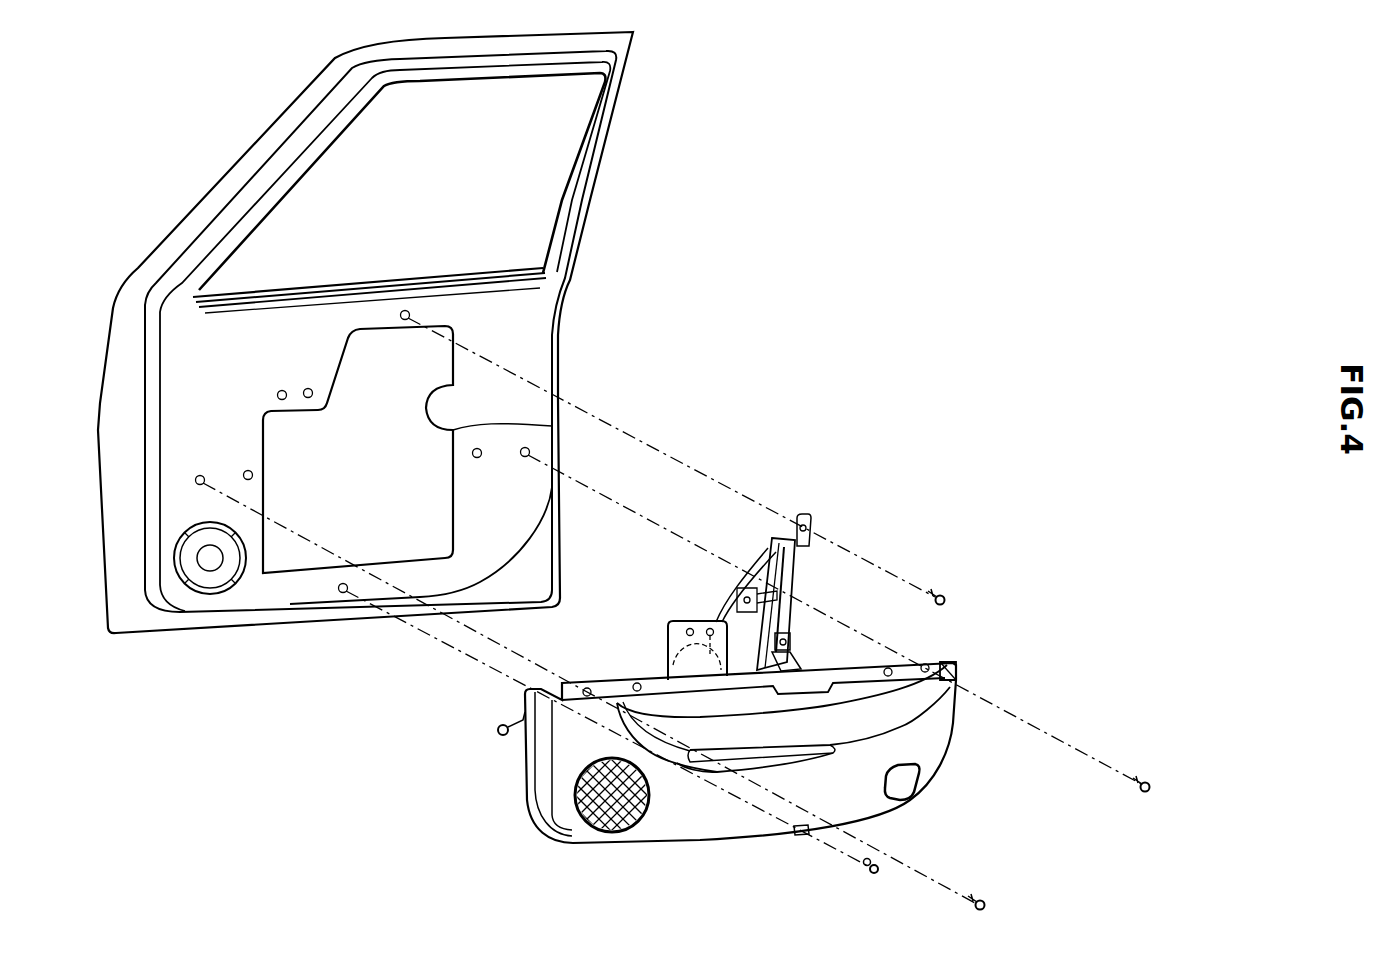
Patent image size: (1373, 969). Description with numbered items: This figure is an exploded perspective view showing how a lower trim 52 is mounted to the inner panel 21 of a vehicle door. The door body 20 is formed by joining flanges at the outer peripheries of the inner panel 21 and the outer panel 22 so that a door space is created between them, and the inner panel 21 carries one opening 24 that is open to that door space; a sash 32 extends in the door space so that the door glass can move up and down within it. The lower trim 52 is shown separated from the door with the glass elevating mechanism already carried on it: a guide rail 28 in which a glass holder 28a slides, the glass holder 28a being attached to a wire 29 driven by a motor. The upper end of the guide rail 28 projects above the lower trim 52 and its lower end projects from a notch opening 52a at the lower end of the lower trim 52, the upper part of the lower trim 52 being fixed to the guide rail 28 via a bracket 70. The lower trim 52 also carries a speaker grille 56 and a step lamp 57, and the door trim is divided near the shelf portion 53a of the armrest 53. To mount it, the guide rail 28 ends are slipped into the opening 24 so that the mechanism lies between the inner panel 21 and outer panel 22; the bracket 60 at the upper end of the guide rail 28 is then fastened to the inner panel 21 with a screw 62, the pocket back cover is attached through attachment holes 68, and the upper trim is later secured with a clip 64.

The door body 20 is at (640, 215).
The inner panel 21 is at (143, 615).
The outer panel 22 is at (98, 470).
The opening 24 is at (553, 427).
The guide rail 28 is at (797, 570).
The glass holder 28a is at (731, 590).
The wire 29 is at (716, 610).
The sash 32 is at (598, 125).
The lower trim 52 is at (697, 840).
The notch opening 52a is at (798, 834).
The armrest 53 is at (908, 708).
The shelf portion 53a is at (940, 662).
The speaker grille 56 is at (612, 820).
The step lamp 57 is at (920, 783).
The bracket 60 is at (808, 516).
The screw 62 is at (944, 597).
The clip 64 is at (880, 873).
The attachment holes 68 is at (503, 725).
The bracket 70 is at (793, 660).